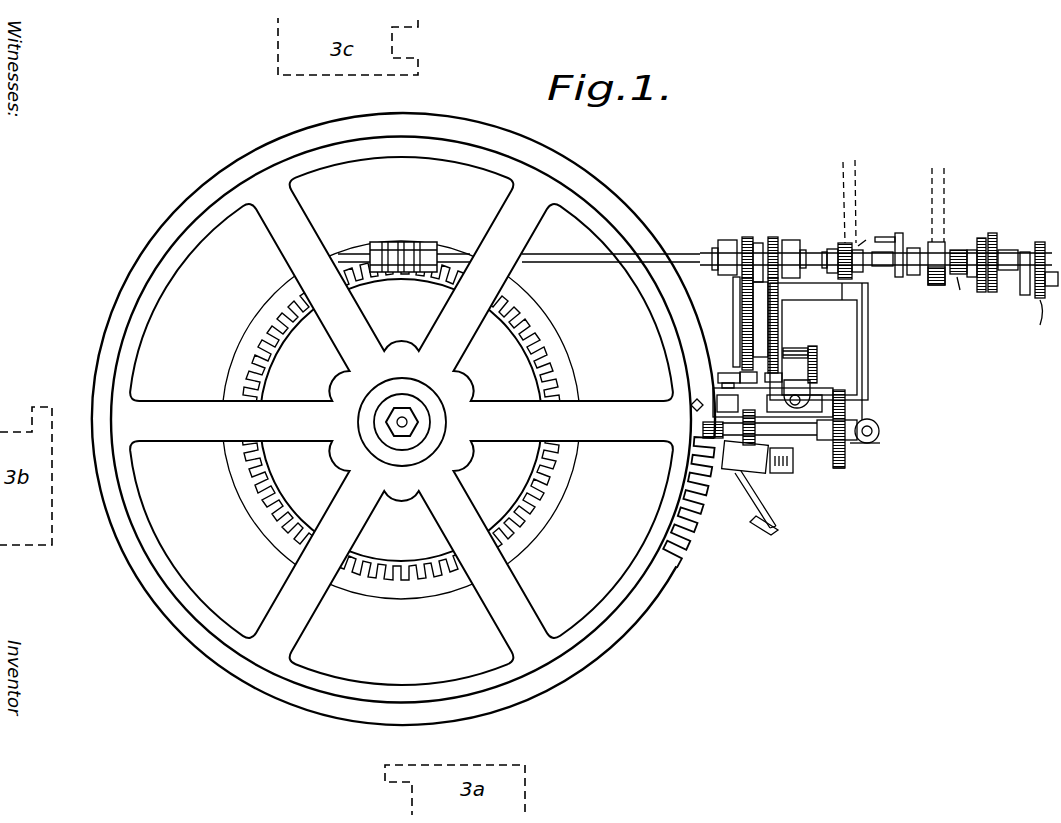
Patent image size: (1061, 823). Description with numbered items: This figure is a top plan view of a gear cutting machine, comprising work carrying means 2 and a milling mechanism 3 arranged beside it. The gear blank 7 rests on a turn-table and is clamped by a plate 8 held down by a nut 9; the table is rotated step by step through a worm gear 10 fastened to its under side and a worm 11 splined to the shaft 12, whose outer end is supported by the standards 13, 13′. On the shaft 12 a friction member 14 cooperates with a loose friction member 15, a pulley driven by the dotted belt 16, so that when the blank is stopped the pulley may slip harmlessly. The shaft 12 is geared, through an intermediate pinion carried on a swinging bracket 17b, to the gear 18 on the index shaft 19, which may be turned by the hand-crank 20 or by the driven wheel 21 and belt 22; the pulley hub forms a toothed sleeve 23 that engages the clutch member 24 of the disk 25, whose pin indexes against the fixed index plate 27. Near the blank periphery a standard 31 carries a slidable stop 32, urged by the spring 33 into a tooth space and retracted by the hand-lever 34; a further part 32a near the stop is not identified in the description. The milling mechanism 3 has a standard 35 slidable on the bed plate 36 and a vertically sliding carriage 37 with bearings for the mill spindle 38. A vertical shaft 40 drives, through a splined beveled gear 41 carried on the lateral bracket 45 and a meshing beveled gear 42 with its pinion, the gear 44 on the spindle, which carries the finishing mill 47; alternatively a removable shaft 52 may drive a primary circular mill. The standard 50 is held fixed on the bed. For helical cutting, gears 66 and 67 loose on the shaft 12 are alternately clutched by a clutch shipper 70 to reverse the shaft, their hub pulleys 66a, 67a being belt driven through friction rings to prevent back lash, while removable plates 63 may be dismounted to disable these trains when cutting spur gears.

The work carrying means 2 is at (403, 419).
The milling mechanism 3 is at (868, 390).
The gear blank 7 is at (350, 318).
The plate 8 is at (378, 419).
The nut 9 is at (397, 406).
The worm gear 10 is at (268, 346).
The worm 11 is at (400, 242).
The shaft 12 is at (548, 262).
The standard 13 is at (913, 275).
The standard 13′ is at (1026, 295).
The friction member 14 is at (838, 243).
The friction member 15 is at (860, 244).
The belt 16 is at (850, 165).
The bracket 17b is at (1040, 318).
The gear 18 is at (1042, 243).
The index shaft 19 is at (889, 266).
The hand-crank 20 is at (896, 244).
The driven wheel 21 is at (936, 285).
The belt 22 is at (940, 194).
The sleeve 23 is at (958, 250).
The clutch member 24 is at (960, 288).
The disk 25 is at (980, 238).
The index plate 27 is at (992, 293).
The standard 31 is at (745, 457).
The stop 32 is at (700, 452).
The pawl 32a is at (782, 510).
The spring 33 is at (793, 462).
The hand-lever 34 is at (772, 531).
The standard 35 is at (812, 345).
The bed plate 36 is at (795, 365).
The carriage 37 is at (850, 395).
The mill spindle 38 is at (755, 440).
The shaft 40 is at (879, 430).
The beveled gear 41 is at (880, 443).
The beveled gear 42 is at (845, 412).
The gear 44 is at (845, 462).
The bracket 45 is at (880, 431).
The mill 47 is at (703, 428).
The standard 50 is at (697, 405).
The shaft 52 is at (722, 375).
The plates 63 is at (742, 345).
The gear 66 is at (773, 240).
The pulley 66a is at (800, 233).
The gear 67 is at (747, 238).
The pulley 67a is at (724, 240).
The clutch shipper 70 is at (742, 312).